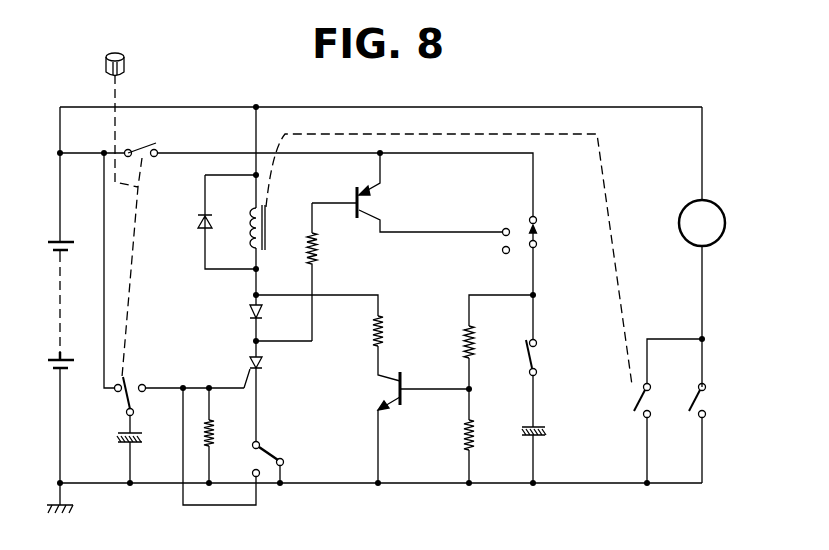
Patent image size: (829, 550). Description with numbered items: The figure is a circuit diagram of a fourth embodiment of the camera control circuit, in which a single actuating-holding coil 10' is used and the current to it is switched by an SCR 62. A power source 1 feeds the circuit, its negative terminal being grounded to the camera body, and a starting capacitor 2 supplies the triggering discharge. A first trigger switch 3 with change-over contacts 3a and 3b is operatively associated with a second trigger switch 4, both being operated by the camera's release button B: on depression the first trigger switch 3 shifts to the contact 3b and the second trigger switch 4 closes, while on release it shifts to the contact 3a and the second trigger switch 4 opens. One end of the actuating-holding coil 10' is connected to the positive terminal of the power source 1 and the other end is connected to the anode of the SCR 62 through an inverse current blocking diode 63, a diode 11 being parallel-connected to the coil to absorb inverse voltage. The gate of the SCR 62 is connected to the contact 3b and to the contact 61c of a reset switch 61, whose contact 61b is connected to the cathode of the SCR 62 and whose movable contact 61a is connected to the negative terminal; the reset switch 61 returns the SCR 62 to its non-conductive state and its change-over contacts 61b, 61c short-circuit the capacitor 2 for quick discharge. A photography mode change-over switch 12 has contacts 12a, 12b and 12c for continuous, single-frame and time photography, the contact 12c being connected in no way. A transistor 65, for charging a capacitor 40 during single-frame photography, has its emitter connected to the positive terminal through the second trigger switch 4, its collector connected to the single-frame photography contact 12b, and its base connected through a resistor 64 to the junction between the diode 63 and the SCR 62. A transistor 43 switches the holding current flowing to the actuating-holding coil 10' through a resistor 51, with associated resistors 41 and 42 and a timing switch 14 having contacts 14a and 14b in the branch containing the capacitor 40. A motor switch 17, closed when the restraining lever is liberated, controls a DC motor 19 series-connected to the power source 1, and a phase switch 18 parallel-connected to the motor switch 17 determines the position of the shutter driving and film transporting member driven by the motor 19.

The release button B is at (124, 66).
The second trigger switch 4 is at (143, 151).
The diode 11 is at (197, 218).
The actuating-holding coil 10' is at (285, 220).
The transistor 65 is at (362, 204).
The resistor 64 is at (318, 251).
The inverse current blocking diode 63 is at (247, 314).
The SCR 62 is at (262, 370).
The single-frame photography contact 12b is at (505, 228).
The time photography contact 12c is at (502, 252).
The continuous photography contact 12a is at (537, 218).
The photography mode change-over switch 12 is at (537, 244).
The DC motor 19 is at (684, 203).
The power source 1 is at (63, 300).
The resistor 51 is at (385, 327).
The resistor 41 is at (462, 343).
The resistor 42 is at (463, 431).
The transistor 43 is at (396, 388).
The switch contact 14b is at (538, 342).
The switch contact 14a is at (538, 366).
The timing switch 14 is at (538, 377).
The capacitor 40 is at (550, 434).
The motor switch 17 is at (636, 401).
The phase switch 18 is at (690, 400).
The first trigger switch 3 is at (126, 386).
The change-over contact 3a is at (115, 391).
The change-over contact 3b is at (144, 391).
The starting capacitor 2 is at (116, 440).
The change-over contact 61c is at (252, 471).
The change-over contact 61b is at (258, 442).
The movable contact 61a is at (268, 453).
The reset switch 61 is at (284, 464).